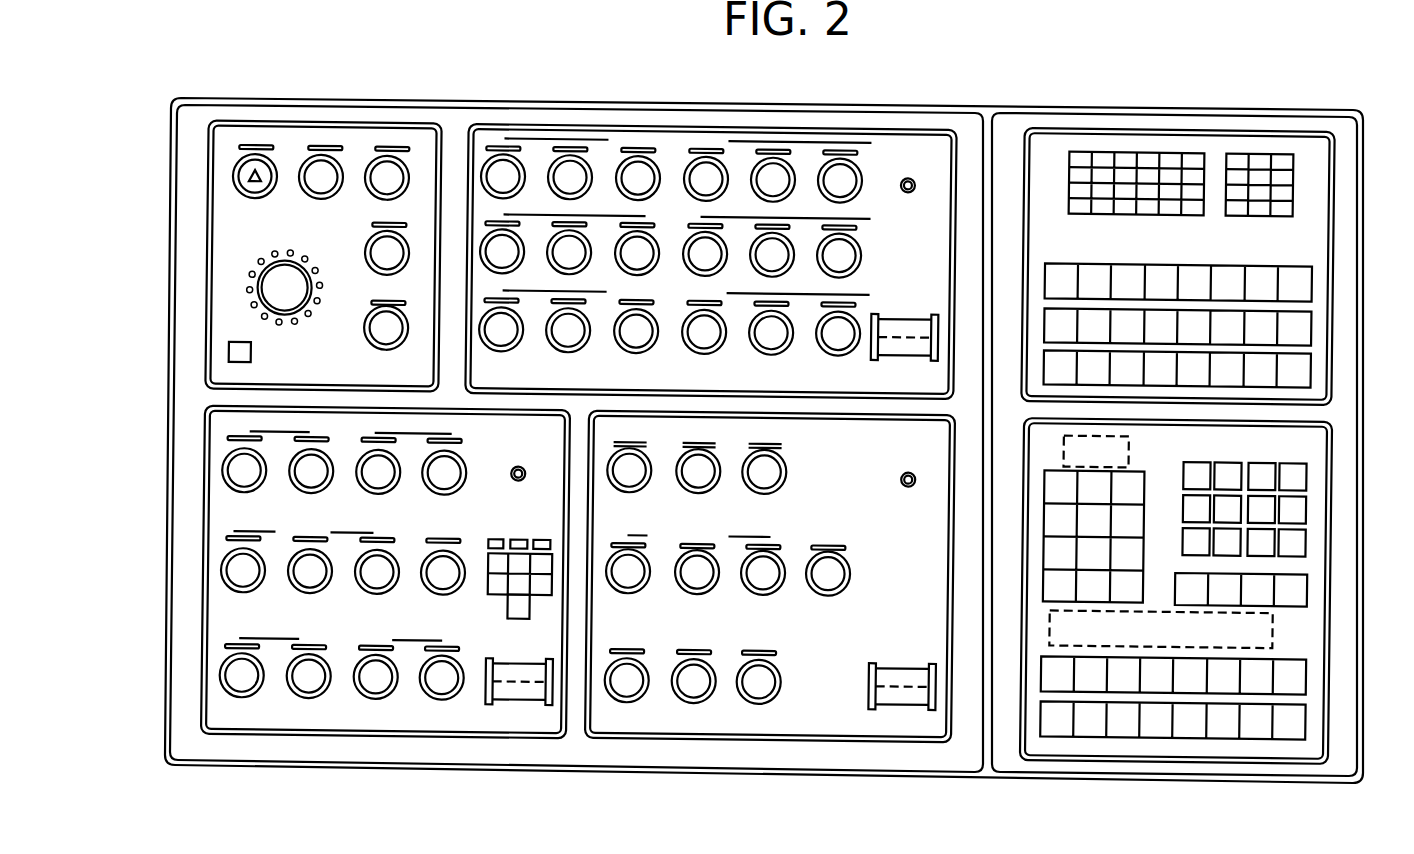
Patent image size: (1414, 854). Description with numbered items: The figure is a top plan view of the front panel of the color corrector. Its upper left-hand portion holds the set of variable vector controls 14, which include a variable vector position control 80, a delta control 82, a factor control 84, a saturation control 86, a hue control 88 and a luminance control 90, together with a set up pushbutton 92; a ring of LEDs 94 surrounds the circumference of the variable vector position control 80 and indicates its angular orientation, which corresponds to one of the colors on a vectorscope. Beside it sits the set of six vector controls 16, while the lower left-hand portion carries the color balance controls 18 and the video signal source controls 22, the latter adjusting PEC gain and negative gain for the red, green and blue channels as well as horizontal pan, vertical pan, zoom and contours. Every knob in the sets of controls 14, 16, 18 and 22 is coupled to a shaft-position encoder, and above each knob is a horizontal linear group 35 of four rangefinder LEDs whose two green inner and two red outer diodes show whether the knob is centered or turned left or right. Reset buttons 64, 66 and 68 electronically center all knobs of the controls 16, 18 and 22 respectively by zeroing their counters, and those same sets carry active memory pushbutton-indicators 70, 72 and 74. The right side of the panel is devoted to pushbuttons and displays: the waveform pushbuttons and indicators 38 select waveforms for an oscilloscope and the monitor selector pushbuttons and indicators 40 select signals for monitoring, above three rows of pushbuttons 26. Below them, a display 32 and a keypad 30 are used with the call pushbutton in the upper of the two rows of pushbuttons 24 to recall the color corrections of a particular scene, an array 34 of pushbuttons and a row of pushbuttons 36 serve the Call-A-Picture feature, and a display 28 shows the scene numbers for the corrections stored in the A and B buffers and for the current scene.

The variable vector controls 14 is at (218, 123).
The six vector controls 16 is at (480, 127).
The color balance controls 18 is at (253, 737).
The video signal source controls 22 is at (608, 740).
The two rows of pushbuttons 24 is at (1310, 676).
The three rows of pushbuttons 26 is at (1312, 283).
The display 28 is at (1275, 631).
The keypad 30 is at (1175, 481).
The display 32 is at (1128, 446).
The array of pushbuttons 34 is at (1305, 463).
The horizontal linear group of rangefinder LEDs 35 is at (230, 646).
The row of pushbuttons 36 is at (1310, 588).
The waveform pushbuttons and indicators 38 is at (1162, 153).
The monitor selector pushbuttons and indicators 40 is at (1268, 153).
The reset button 64 is at (902, 177).
The reset button 66 is at (547, 443).
The reset button 68 is at (928, 452).
The active memory pushbutton-indicator 70 is at (937, 318).
The active memory pushbutton-indicator 72 is at (552, 668).
The active memory pushbutton-indicator 74 is at (870, 678).
The variable vector position control 80 is at (270, 311).
The delta control 82 is at (270, 163).
The factor control 84 is at (340, 163).
The saturation control 86 is at (403, 163).
The hue control 88 is at (409, 252).
The luminance control 90 is at (409, 327).
The set up pushbutton 92 is at (243, 363).
The ring of LEDs 94 is at (259, 262).